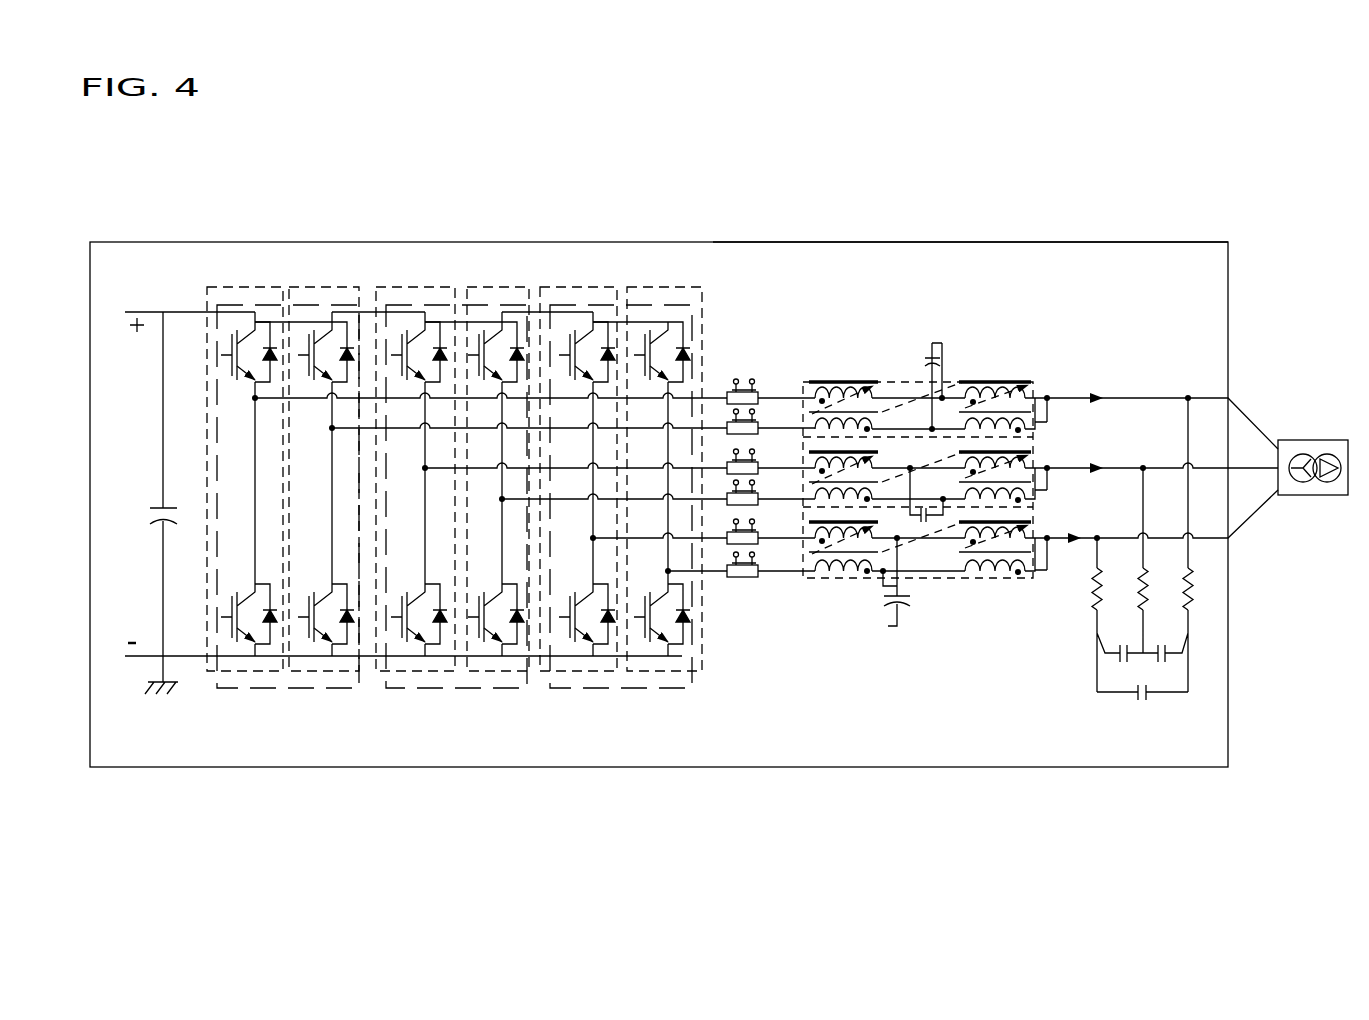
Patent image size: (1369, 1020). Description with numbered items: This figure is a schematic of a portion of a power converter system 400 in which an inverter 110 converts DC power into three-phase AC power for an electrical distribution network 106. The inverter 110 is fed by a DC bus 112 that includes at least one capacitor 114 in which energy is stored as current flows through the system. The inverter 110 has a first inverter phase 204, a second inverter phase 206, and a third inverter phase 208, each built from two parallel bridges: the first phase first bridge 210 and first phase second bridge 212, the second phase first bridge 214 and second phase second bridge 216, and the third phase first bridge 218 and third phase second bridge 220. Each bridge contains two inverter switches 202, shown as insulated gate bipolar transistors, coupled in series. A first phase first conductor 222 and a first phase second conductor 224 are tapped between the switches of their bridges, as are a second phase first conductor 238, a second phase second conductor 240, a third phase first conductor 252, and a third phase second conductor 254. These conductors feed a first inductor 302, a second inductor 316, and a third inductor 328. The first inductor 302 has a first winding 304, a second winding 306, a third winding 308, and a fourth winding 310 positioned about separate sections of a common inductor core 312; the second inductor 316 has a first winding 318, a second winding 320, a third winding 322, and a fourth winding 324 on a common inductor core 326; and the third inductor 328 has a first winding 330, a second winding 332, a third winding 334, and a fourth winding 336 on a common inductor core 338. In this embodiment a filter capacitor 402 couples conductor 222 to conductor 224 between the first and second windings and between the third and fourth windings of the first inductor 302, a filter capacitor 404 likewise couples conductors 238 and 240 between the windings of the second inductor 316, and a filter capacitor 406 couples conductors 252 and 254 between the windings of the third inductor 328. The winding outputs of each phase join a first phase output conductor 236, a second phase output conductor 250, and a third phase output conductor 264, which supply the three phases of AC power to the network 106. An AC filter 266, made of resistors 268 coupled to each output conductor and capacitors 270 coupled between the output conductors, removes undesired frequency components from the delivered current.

The electrical distribution network 106 is at (1320, 440).
The inverter 110 is at (150, 274).
The DC bus 112 is at (118, 372).
The capacitor 114 is at (148, 528).
The inverter switch 202 is at (247, 328).
The first inverter phase 204 is at (232, 689).
The second inverter phase 206 is at (401, 689).
The third inverter phase 208 is at (565, 689).
The first phase first bridge 210 is at (212, 284).
The first phase second bridge 212 is at (297, 284).
The second phase first bridge 214 is at (382, 284).
The second phase second bridge 216 is at (470, 284).
The third phase first bridge 218 is at (544, 284).
The third phase second bridge 220 is at (630, 284).
The first phase first conductor 222 is at (272, 401).
The first phase second conductor 224 is at (340, 427).
The first phase output conductor 236 is at (1133, 397).
The second phase first conductor 238 is at (433, 466).
The second phase second conductor 240 is at (509, 498).
The second phase output conductor 250 is at (1140, 467).
The third phase first conductor 252 is at (600, 537).
The third phase second conductor 254 is at (673, 570).
The third phase output conductor 264 is at (1120, 536).
The AC filter 266 is at (1085, 670).
The resistor 268 is at (1106, 578).
The capacitor 270 is at (1130, 666).
The first inductor 302 is at (851, 372).
The first winding 304 is at (795, 386).
The second winding 306 is at (1045, 390).
The third winding 308 is at (814, 426).
The fourth winding 310 is at (1047, 419).
The inductor core 312 is at (953, 385).
The second inductor 316 is at (872, 441).
The first winding 318 is at (814, 466).
The second winding 320 is at (1047, 459).
The third winding 322 is at (814, 497).
The fourth winding 324 is at (1047, 479).
The inductor core 326 is at (862, 440).
The third inductor 328 is at (1082, 505).
The first winding 330 is at (814, 536).
The second winding 332 is at (1050, 490).
The third winding 334 is at (814, 569).
The fourth winding 336 is at (992, 588).
The inductor core 338 is at (877, 522).
The power converter system 400 is at (713, 242).
The filter capacitor 402 is at (927, 345).
The filter capacitor 404 is at (914, 496).
The filter capacitor 406 is at (876, 610).